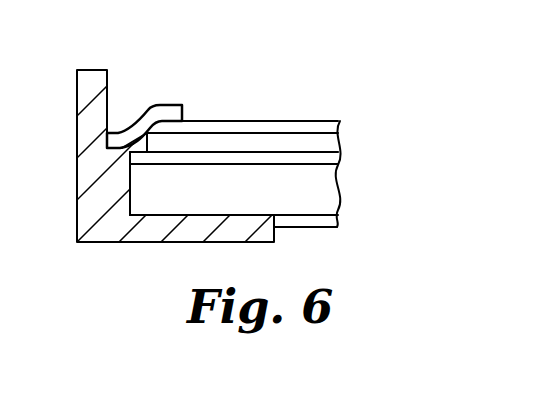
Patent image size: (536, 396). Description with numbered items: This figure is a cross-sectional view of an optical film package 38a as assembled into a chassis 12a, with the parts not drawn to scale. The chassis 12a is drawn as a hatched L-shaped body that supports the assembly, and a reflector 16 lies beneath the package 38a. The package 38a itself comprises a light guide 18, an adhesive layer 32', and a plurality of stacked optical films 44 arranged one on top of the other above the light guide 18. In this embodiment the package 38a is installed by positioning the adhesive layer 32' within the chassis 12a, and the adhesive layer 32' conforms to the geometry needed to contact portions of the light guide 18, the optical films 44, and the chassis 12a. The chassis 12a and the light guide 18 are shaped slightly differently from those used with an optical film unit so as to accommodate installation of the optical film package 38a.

The chassis 12a is at (88, 76).
The adhesive layer 32' is at (144, 105).
The plurality of stacked optical films 44 is at (345, 118).
The light guide 18 is at (328, 182).
The reflector 16 is at (315, 220).
The optical film package 38a is at (190, 105).